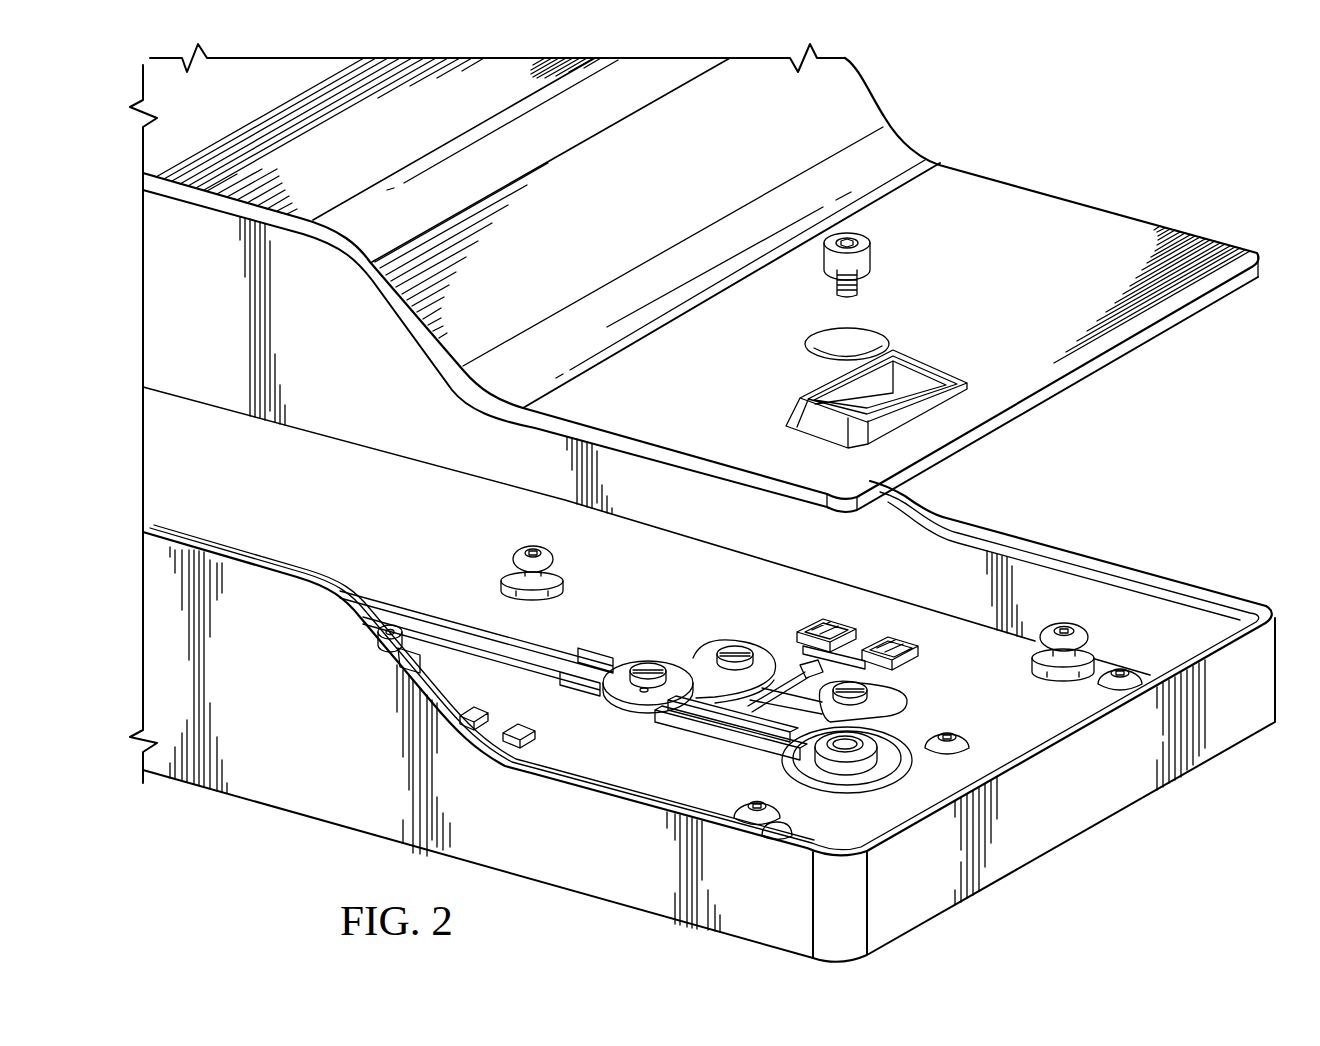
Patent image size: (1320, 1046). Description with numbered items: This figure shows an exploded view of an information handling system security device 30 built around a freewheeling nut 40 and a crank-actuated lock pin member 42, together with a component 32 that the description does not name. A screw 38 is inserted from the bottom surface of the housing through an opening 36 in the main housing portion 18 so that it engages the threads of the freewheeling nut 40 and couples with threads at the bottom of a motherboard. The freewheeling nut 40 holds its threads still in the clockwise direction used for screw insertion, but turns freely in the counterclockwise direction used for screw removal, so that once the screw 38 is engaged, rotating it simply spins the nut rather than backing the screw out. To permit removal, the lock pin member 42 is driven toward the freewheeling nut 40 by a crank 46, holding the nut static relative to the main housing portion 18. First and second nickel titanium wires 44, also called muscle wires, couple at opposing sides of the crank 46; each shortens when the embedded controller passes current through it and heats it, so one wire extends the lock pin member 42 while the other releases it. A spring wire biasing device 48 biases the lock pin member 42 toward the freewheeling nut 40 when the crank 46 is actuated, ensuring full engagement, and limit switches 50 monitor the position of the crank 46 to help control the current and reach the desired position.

The main housing portion 18 is at (1078, 837).
The security device 30 is at (708, 562).
The cover plate 32 is at (1028, 190).
The opening 36 is at (834, 351).
The screw 38 is at (870, 247).
The freewheeling nut 40 is at (866, 734).
The lock pin member 42 is at (693, 724).
The nickel titanium wires 44 is at (433, 608).
The crank 46 is at (780, 655).
The spring wire biasing device 48 is at (753, 721).
The limit switches 50 is at (873, 614).